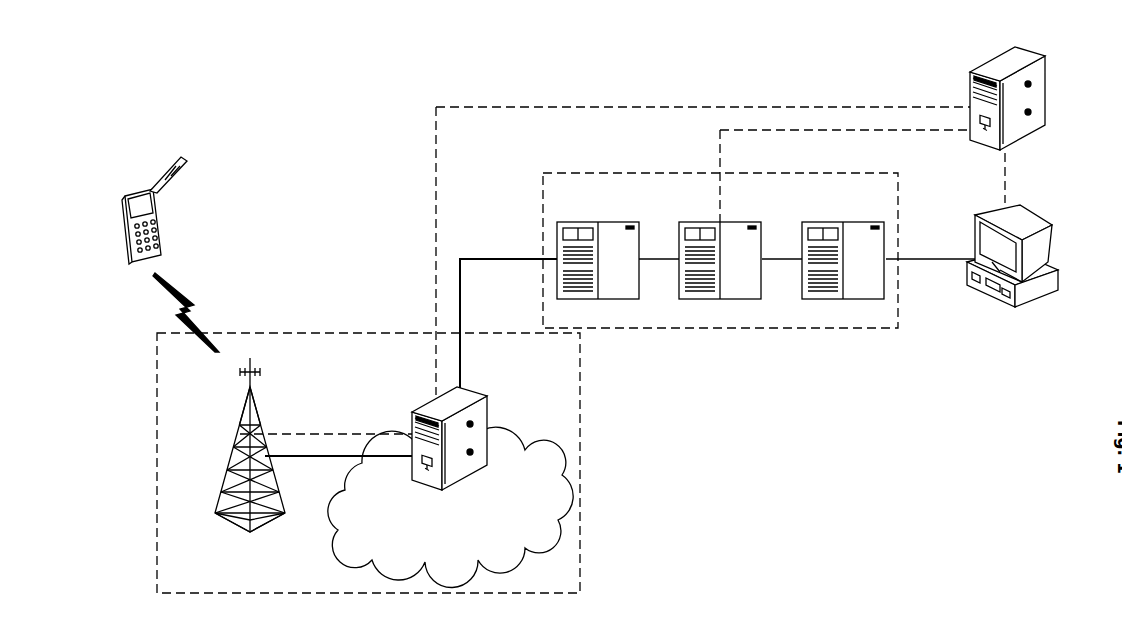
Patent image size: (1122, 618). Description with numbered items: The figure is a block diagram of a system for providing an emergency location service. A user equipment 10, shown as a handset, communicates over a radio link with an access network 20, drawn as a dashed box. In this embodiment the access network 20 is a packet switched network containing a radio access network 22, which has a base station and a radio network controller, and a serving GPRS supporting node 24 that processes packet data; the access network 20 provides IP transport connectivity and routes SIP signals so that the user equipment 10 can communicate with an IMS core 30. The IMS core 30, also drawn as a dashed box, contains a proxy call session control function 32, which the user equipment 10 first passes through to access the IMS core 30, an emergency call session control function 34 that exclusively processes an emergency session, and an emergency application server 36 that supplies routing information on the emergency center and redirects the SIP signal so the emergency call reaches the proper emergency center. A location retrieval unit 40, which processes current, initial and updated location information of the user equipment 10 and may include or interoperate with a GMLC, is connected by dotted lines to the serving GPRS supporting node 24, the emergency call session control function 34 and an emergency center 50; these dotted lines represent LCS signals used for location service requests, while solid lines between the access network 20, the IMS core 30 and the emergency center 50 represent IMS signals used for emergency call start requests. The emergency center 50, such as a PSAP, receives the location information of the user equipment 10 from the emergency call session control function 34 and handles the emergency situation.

The user equipment 10 is at (122, 218).
The access network 20 is at (327, 333).
The radio access network 22 is at (240, 434).
The serving GPRS supporting node 24 is at (412, 395).
The IMS core 30 is at (800, 328).
The proxy call session control function 32 is at (614, 222).
The emergency call session control function 34 is at (737, 222).
The emergency application server 36 is at (868, 222).
The location retrieval unit 40 is at (992, 62).
The emergency center 50 is at (1040, 300).